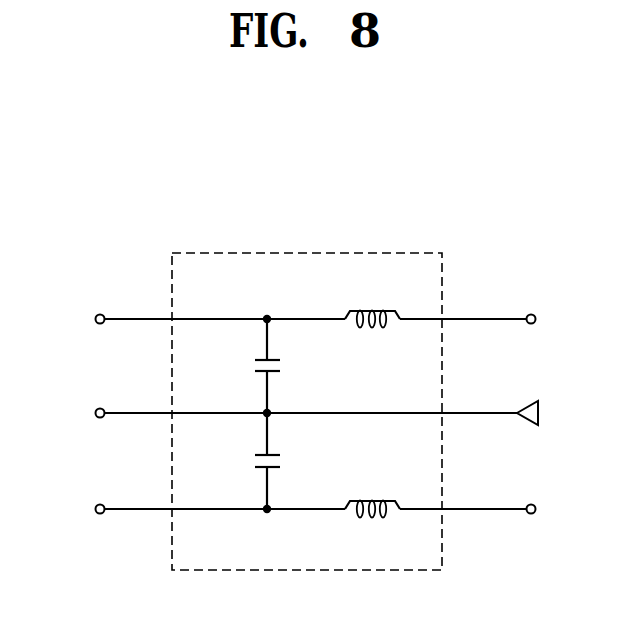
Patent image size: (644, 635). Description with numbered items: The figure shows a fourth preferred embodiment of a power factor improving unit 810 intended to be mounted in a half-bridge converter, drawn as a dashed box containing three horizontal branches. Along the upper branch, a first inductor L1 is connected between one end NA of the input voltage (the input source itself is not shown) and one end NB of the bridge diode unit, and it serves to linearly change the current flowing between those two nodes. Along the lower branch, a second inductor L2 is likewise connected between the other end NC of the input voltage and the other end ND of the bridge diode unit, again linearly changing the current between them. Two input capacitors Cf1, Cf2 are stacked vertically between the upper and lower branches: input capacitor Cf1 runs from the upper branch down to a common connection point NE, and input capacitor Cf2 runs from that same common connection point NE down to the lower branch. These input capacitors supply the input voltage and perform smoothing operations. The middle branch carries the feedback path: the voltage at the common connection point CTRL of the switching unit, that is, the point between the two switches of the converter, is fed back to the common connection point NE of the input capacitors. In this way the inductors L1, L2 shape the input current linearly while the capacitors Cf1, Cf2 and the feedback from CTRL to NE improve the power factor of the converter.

The power factor improving unit 810 is at (310, 253).
The first inductor L1 is at (372, 338).
The second inductor L2 is at (372, 491).
The input capacitor Cf1 is at (243, 368).
The input capacitor Cf2 is at (243, 461).
The one end of the input voltage NA is at (78, 321).
The one end of the bridge diode unit NB is at (555, 321).
The other end of the input voltage NC is at (78, 510).
The other end of the bridge diode unit ND is at (556, 510).
The common connection point of the input capacitors NE is at (78, 414).
The common connection point of the switching unit CTRL is at (561, 413).